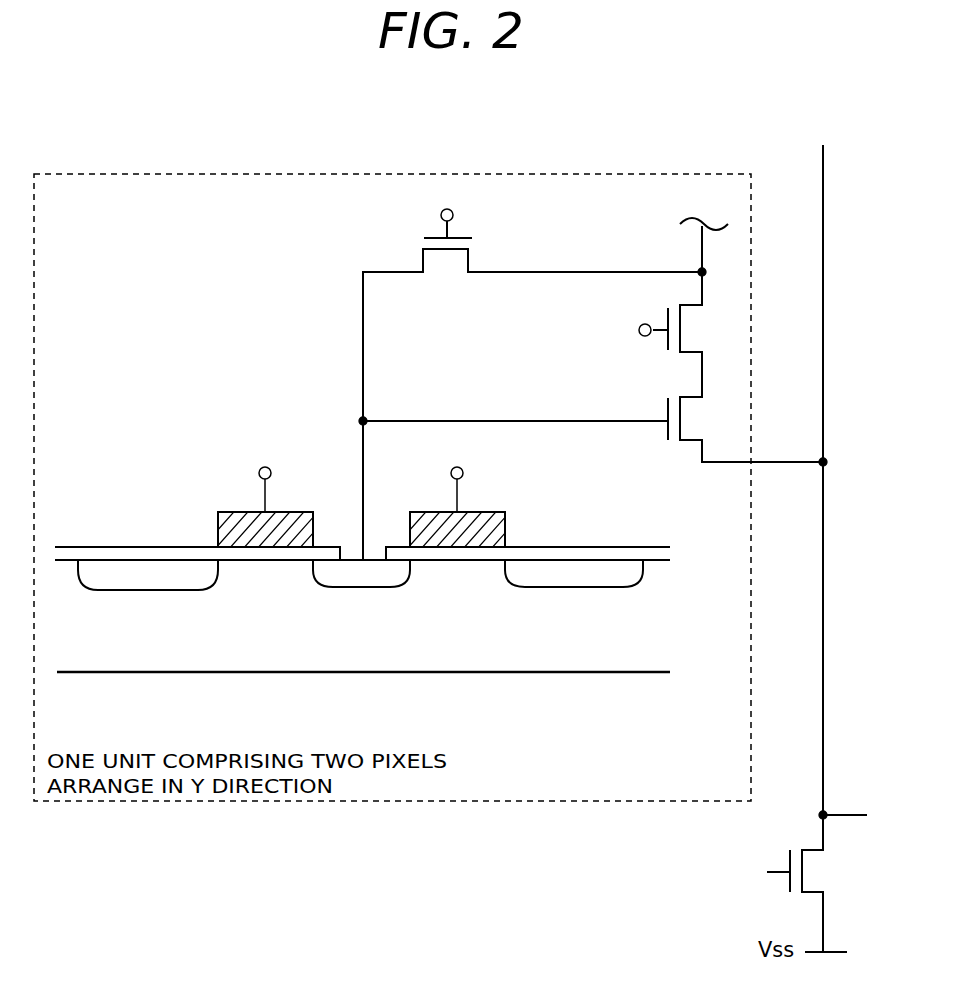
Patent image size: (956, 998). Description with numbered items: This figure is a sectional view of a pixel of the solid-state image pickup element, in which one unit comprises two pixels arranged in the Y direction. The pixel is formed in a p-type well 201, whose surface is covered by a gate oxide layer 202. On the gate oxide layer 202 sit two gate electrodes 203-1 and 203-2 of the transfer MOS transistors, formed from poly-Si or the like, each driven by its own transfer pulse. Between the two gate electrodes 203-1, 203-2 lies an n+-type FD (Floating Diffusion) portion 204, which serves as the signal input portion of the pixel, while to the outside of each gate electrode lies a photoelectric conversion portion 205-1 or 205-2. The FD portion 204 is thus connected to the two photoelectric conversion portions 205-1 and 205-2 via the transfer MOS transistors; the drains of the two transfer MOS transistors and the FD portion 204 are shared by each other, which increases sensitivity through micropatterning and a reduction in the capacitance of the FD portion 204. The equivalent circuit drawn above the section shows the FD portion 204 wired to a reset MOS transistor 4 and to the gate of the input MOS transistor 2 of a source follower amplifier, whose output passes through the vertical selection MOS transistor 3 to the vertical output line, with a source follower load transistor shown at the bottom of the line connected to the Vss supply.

The input MOS transistor of a source follower amplifier 2 is at (692, 418).
The vertical selection MOS transistor 3 is at (692, 330).
The reset MOS transistor 4 is at (417, 258).
The p-type well 201 is at (192, 665).
The gate oxide layer 202 is at (278, 555).
The gate electrode of transfer MOS transistor 203-1 is at (227, 510).
The gate electrode of transfer MOS transistor 203-2 is at (503, 510).
The n+-type FD (Floating Diffusion) portion 204 is at (378, 582).
The photoelectric conversion portion 205-1 is at (137, 568).
The photoelectric conversion portion 205-2 is at (600, 563).